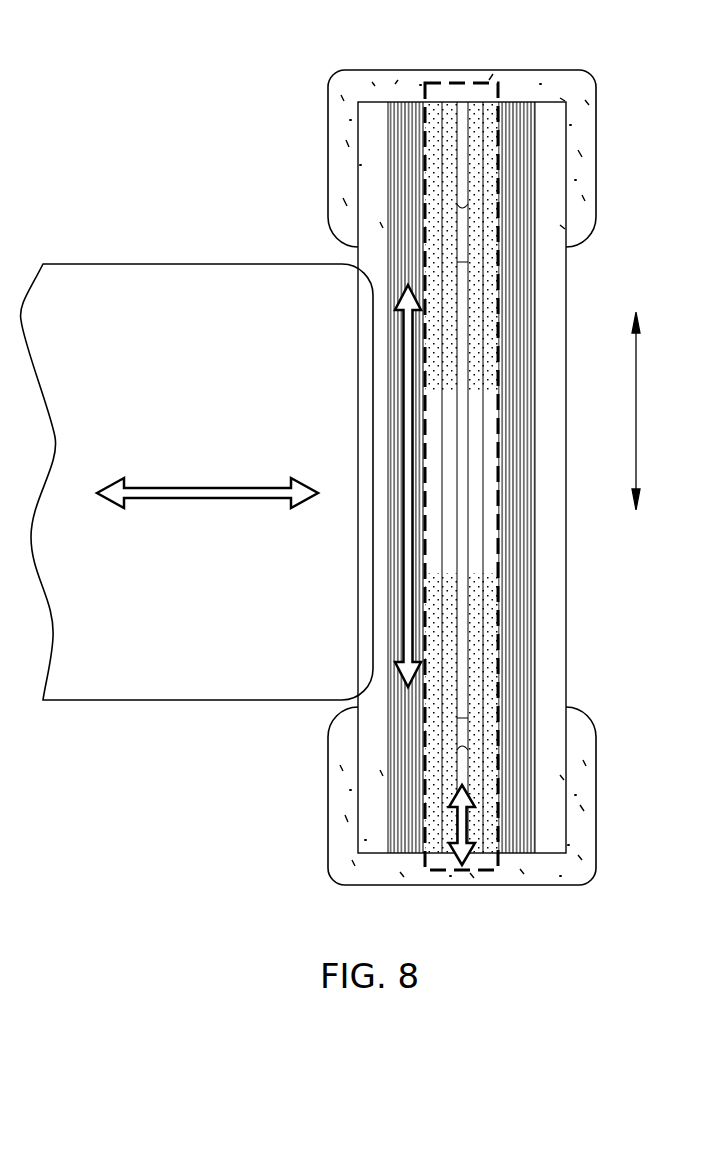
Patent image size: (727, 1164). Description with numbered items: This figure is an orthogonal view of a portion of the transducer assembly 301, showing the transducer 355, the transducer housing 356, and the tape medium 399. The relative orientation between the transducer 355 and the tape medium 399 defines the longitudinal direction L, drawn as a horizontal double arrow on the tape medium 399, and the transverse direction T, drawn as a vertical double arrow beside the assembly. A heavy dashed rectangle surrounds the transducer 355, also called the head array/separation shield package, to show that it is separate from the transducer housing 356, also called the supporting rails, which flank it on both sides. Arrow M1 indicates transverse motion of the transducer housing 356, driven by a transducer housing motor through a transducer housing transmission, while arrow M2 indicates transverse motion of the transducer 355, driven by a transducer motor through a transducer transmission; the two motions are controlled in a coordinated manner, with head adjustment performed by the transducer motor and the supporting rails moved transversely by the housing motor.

The transducer assembly 301 is at (143, 67).
The transducer 355 is at (463, 108).
The transducer housing 356 is at (381, 102).
The tape medium 399 is at (113, 264).
The longitudinal direction L is at (207, 506).
The transverse direction T is at (648, 411).
The arrow indicating transverse motion of transducer housing M1 is at (403, 673).
The arrow indicating transverse motion of transducer M2 is at (470, 825).